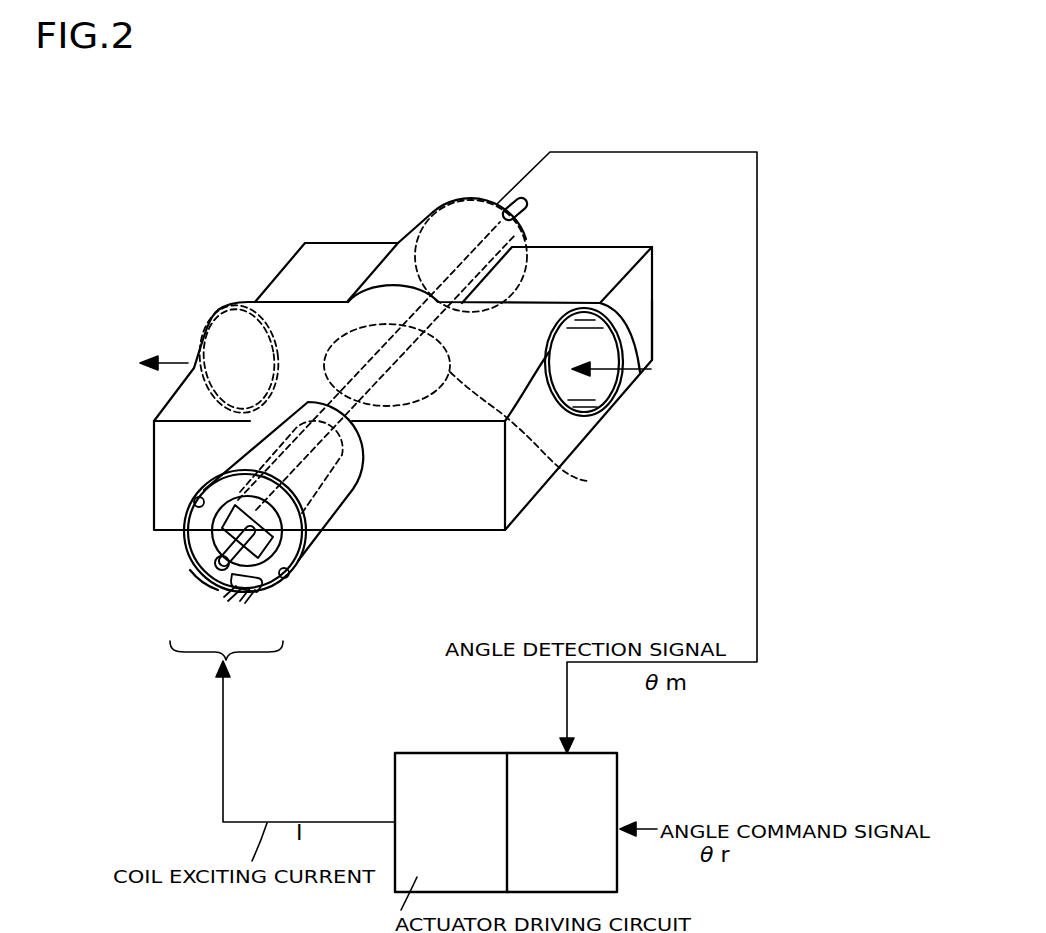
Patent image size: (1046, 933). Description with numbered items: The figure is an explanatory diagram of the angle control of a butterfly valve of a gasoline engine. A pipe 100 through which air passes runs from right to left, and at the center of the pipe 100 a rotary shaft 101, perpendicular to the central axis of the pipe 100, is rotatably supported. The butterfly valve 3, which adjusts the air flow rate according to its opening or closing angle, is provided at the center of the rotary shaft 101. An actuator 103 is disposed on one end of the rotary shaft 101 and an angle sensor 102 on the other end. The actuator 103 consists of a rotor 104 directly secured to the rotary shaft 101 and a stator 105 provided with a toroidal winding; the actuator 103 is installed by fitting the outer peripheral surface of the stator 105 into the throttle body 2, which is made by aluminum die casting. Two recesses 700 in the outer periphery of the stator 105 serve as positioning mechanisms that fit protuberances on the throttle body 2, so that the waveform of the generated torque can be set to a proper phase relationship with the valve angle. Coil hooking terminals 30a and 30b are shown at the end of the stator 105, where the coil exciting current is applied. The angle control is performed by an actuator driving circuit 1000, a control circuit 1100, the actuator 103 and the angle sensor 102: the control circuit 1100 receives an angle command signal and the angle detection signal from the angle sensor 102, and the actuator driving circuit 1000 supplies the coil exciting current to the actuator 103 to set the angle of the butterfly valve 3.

The throttle body 2 is at (259, 259).
The butterfly valve 3 is at (529, 437).
The pipe 100 is at (653, 316).
The rotary shaft 101 is at (218, 596).
The angle sensor 102 is at (479, 210).
The actuator 103 is at (385, 486).
The rotor 104 is at (203, 546).
The stator 105 is at (216, 567).
The recesses 700 is at (195, 498).
The coil hooking terminal 30a is at (222, 593).
The coil hooking terminal 30b is at (240, 597).
The actuator driving circuit 1000 is at (506, 822).
The control circuit 1100 is at (557, 822).